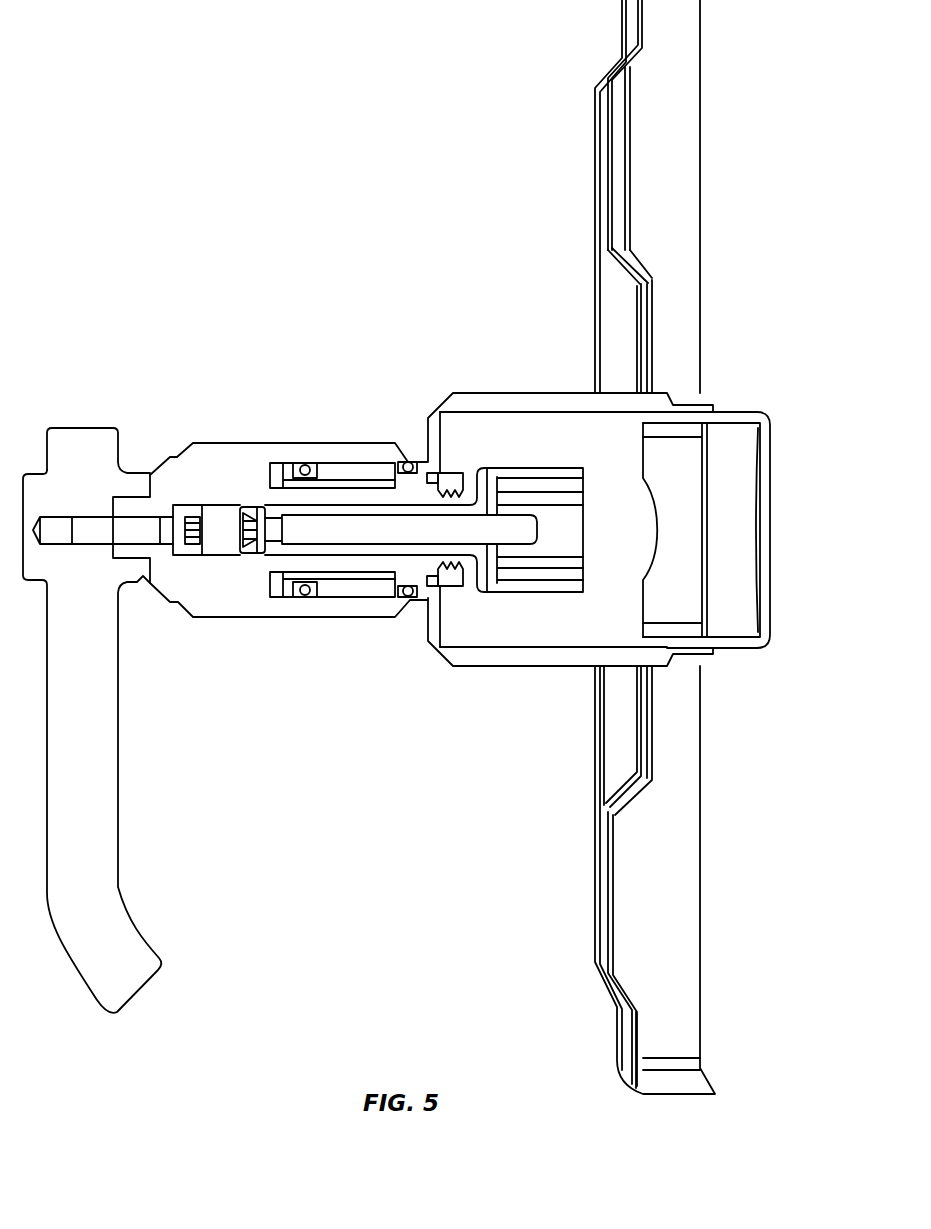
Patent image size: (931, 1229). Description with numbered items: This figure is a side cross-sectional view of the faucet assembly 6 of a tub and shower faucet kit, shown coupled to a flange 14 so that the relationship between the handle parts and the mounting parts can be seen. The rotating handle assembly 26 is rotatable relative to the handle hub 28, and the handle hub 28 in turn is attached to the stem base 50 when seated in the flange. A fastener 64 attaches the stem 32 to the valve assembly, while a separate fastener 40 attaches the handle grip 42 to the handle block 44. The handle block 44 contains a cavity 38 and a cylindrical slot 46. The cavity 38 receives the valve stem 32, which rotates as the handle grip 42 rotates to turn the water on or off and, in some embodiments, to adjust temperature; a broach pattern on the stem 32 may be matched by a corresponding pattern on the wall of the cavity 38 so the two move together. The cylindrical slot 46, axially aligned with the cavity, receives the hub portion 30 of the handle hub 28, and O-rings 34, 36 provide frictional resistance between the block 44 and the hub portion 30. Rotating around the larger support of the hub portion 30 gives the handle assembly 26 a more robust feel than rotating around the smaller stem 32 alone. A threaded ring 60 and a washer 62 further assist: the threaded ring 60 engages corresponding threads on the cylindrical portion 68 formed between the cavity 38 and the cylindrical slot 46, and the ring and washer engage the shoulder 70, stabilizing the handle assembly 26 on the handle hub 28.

The faucet assembly 6 is at (312, 336).
The flange 14 is at (682, 162).
The rotating handle assembly 26 is at (195, 396).
The handle hub 28 is at (560, 378).
The hub portion 30 is at (303, 508).
The stem 32 is at (401, 523).
The O-ring 34 is at (304, 463).
The O-ring 36 is at (408, 598).
The cavity 38 is at (220, 548).
The fastener 40 is at (103, 530).
The handle grip 42 is at (83, 440).
The handle block 44 is at (215, 446).
The cylindrical slot 46 is at (277, 585).
The stem base 50 is at (743, 405).
The threaded ring 60 is at (456, 478).
The washer 62 is at (446, 478).
The fastener 64 is at (317, 528).
The cylindrical portion 68 is at (406, 495).
The shoulder 70 is at (424, 592).